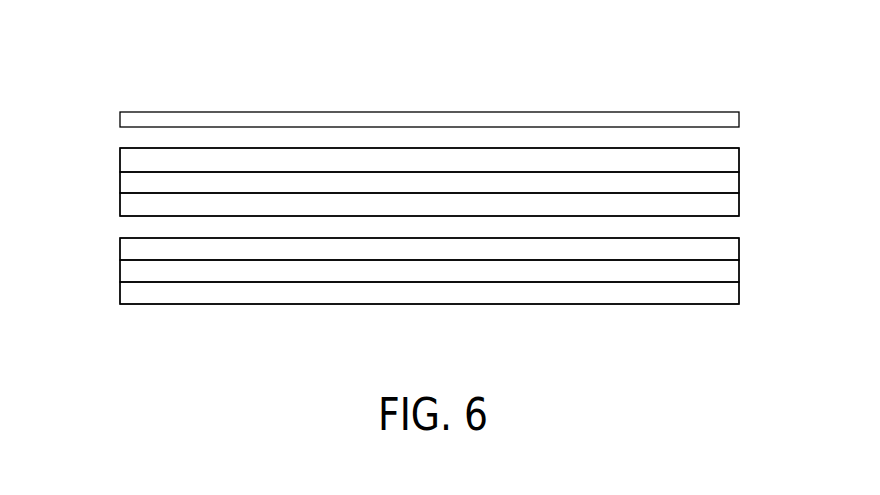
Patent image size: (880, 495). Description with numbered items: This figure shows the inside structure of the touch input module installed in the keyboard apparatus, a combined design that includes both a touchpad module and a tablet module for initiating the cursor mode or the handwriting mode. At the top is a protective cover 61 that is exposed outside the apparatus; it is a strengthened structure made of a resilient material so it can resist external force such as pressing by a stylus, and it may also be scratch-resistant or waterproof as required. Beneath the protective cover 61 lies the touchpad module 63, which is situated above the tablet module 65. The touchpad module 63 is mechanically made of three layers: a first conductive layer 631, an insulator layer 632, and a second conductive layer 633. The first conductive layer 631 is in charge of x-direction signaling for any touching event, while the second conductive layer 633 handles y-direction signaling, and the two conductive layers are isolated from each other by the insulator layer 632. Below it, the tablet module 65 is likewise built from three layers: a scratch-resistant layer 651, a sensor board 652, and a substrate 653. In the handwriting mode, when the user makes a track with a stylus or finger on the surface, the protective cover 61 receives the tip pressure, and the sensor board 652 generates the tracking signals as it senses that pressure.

The protective cover 61 is at (728, 118).
The touchpad module 63 is at (728, 182).
The first conductive layer 631 is at (132, 162).
The insulator layer 632 is at (132, 184).
The second conductive layer 633 is at (132, 207).
The tablet module 65 is at (728, 272).
The scratch-resistant layer 651 is at (132, 251).
The sensor board 652 is at (132, 274).
The substrate 653 is at (132, 297).